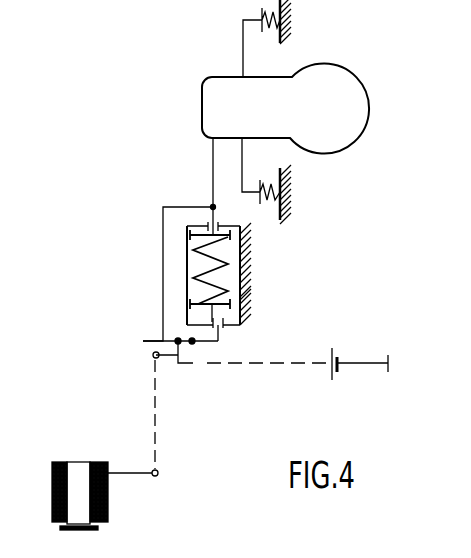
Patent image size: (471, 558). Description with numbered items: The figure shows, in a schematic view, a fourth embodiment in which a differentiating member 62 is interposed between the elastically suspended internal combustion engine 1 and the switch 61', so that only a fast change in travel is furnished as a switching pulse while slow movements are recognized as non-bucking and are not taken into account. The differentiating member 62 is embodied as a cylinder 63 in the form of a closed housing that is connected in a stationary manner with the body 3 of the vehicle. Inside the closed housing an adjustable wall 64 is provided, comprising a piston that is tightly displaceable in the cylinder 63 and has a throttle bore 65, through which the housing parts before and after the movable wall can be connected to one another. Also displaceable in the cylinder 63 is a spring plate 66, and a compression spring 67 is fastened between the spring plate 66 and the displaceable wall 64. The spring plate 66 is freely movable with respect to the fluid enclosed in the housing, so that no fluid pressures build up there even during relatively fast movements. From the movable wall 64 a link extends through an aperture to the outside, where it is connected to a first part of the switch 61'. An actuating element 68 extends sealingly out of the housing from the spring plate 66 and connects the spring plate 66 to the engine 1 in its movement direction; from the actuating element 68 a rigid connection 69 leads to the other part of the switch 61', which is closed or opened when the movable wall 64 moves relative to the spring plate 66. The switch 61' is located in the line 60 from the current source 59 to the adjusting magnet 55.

The internal combustion engine 1 is at (218, 84).
The body 3 is at (248, 301).
The adjusting magnet 55 is at (108, 505).
The current source 59 is at (338, 380).
The line 60 is at (153, 419).
The switch 61' is at (261, 417).
The differentiating member 62 is at (138, 222).
The cylinder 63 is at (190, 227).
The adjustable wall 64 is at (233, 328).
The throttle bore 65 is at (188, 307).
The spring plate 66 is at (203, 224).
The compression spring 67 is at (192, 285).
The actuating element 68 is at (212, 157).
The rigid connection 69 is at (163, 340).